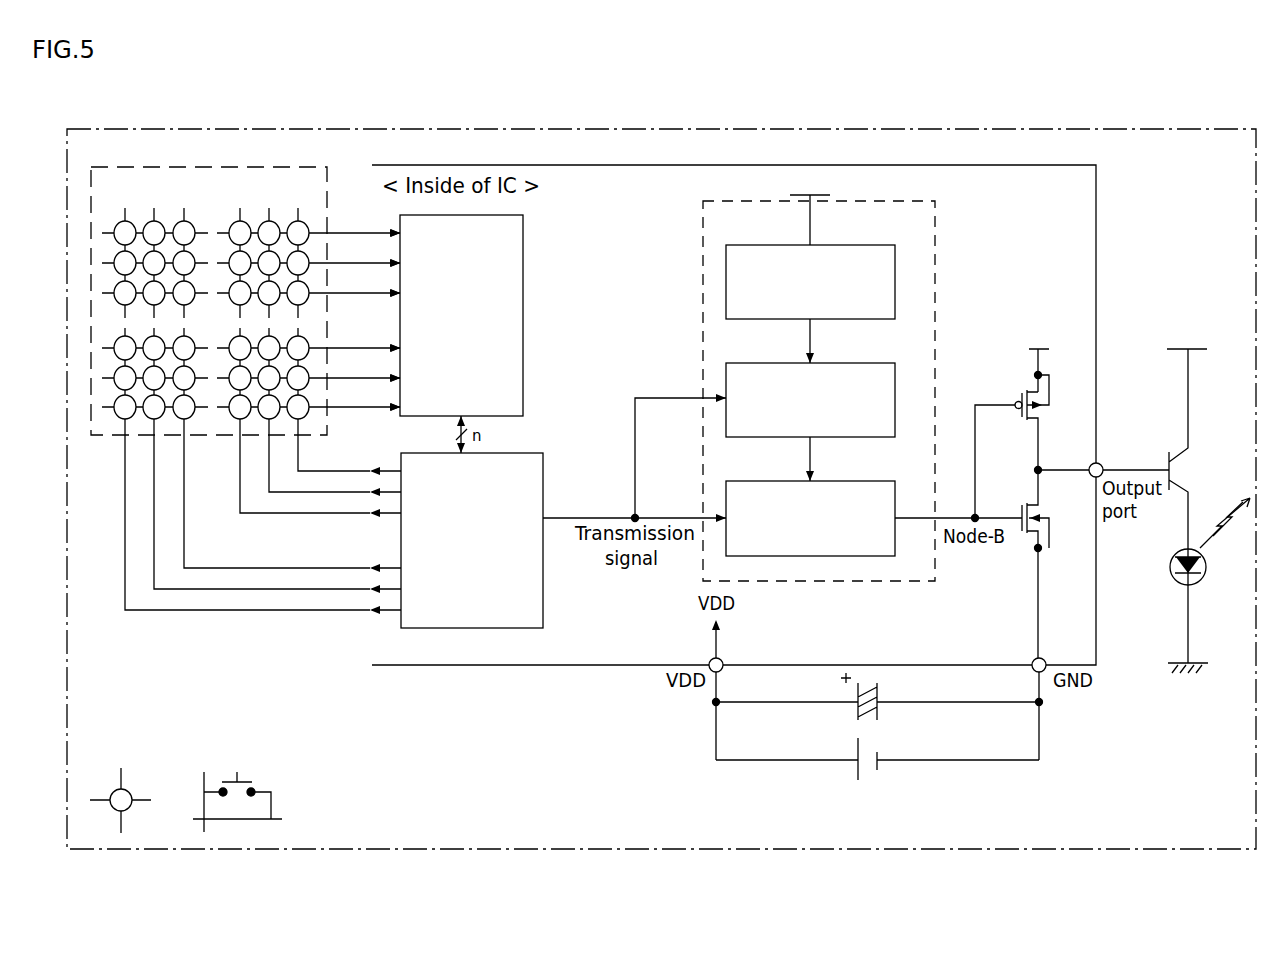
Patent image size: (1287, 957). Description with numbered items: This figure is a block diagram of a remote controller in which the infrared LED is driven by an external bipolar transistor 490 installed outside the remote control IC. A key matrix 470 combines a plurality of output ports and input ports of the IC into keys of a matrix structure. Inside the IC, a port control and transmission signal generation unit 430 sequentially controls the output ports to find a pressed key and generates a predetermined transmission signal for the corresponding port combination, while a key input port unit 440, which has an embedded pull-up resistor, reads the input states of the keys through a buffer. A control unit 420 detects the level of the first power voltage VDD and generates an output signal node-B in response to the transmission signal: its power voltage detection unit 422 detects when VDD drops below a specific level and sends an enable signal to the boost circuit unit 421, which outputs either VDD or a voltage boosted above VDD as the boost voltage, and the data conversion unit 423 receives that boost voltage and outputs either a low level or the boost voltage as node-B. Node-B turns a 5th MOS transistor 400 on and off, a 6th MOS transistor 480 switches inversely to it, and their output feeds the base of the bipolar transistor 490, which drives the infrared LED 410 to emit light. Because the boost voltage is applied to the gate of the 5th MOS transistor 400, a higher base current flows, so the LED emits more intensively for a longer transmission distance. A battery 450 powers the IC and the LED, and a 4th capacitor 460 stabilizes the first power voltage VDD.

The 5th MOS transistor 400 is at (1051, 563).
The infrared LED 410 is at (1191, 599).
The control unit 420 is at (848, 398).
The boost circuit unit 421 is at (743, 363).
The power voltage detection unit 422 is at (743, 245).
The data conversion unit 423 is at (743, 481).
The port control and transmission signal generation unit 430 is at (530, 453).
The key input port unit 440 is at (523, 247).
The battery 450 is at (855, 785).
The 4th capacitor 460 is at (855, 718).
The key matrix 470 is at (97, 435).
The 6th MOS transistor 480 is at (1022, 395).
The bipolar transistor 490 is at (1178, 434).